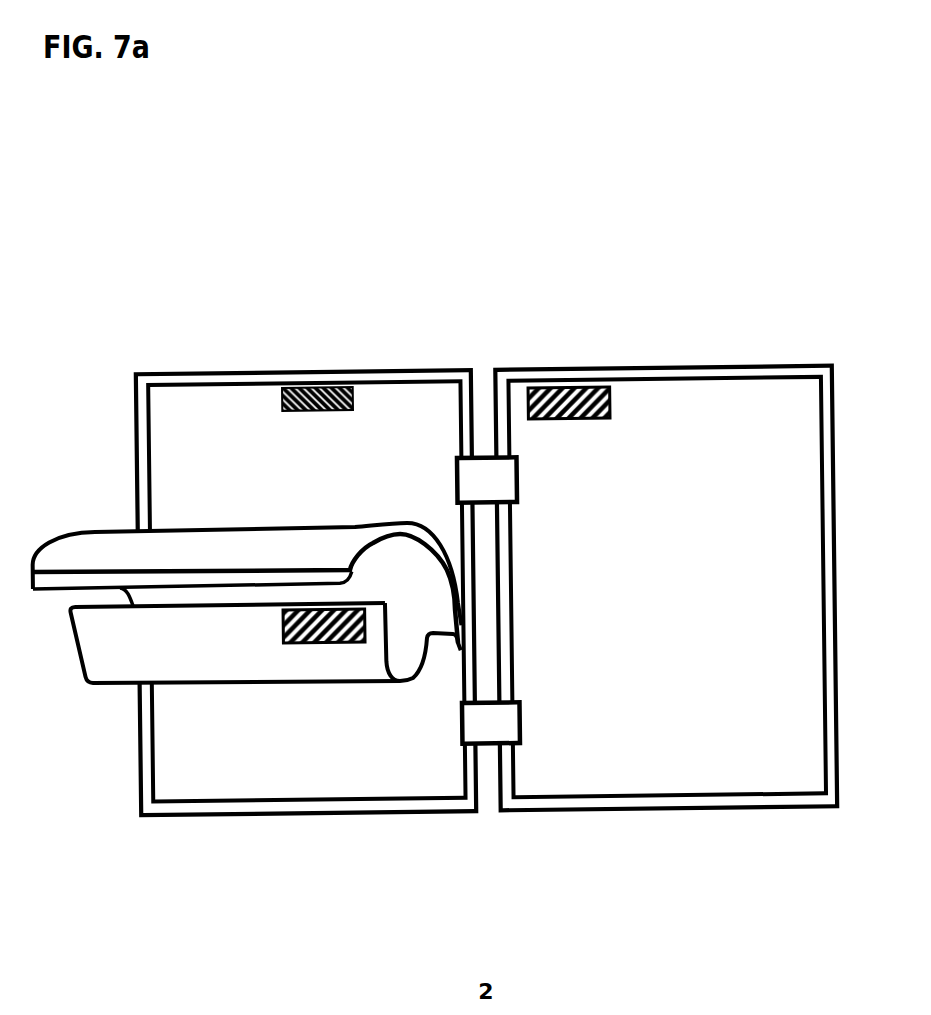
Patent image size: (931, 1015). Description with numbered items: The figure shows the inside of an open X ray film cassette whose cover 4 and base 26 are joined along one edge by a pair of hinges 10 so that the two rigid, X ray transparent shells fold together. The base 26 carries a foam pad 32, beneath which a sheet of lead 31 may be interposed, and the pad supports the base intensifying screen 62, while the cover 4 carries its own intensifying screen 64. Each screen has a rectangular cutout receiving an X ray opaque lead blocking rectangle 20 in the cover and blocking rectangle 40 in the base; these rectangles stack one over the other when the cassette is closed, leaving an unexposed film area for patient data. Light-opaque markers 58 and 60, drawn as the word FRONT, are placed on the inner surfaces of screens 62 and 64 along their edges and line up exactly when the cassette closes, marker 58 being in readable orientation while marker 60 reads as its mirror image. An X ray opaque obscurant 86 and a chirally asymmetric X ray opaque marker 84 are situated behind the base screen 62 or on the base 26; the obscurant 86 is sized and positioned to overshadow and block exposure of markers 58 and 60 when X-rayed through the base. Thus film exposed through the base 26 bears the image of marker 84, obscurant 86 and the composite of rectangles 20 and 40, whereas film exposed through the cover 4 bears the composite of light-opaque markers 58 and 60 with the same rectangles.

The cover 4 is at (692, 815).
The base 26 is at (319, 815).
The hinges 10 is at (476, 492).
The blocking rectangle 20 is at (584, 389).
The sheet of lead 31 is at (308, 496).
The foam pad 32 is at (116, 546).
The blocking rectangle 40 is at (311, 641).
The light-opaque marker 58 is at (213, 614).
The light-opaque marker 60 is at (685, 402).
The intensifying screen 62 is at (331, 748).
The intensifying screen 64 is at (690, 686).
The X ray opaque marker 84 is at (180, 378).
The X ray opaque obscurant 86 is at (296, 378).